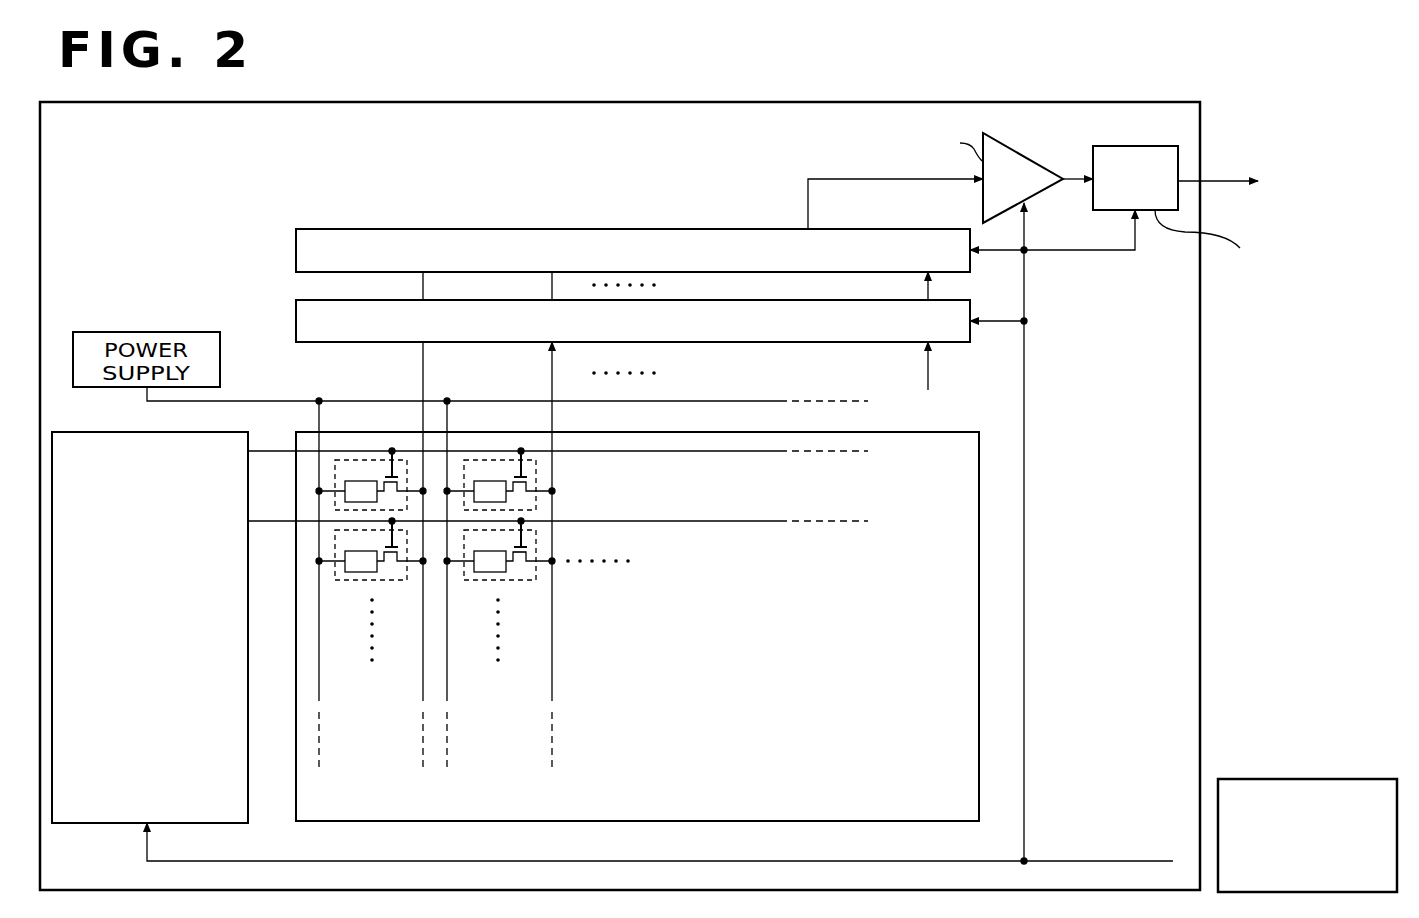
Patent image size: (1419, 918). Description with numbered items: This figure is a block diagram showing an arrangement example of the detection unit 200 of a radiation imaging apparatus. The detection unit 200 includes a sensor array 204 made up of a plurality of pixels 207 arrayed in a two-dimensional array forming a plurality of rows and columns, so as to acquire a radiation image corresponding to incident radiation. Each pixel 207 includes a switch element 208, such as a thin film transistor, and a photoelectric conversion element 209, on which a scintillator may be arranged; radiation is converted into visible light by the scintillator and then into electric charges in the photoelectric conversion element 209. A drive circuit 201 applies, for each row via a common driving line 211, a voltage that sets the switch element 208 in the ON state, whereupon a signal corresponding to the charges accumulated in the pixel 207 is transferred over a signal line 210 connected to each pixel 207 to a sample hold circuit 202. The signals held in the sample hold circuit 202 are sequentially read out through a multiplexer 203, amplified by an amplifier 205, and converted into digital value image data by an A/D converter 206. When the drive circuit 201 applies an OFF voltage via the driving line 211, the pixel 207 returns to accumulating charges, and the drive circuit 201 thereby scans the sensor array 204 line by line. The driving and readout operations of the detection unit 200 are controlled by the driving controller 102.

The detection unit 200 is at (1202, 497).
The drive circuit 201 is at (132, 432).
The sample hold circuit 202 is at (294, 316).
The multiplexer 203 is at (294, 248).
The sensor array 204 is at (905, 432).
The amplifier 205 is at (935, 179).
The A/D converter 206 is at (1203, 223).
The pixel 207 is at (536, 465).
The switch element 208 is at (518, 563).
The photoelectric conversion element 209 is at (487, 572).
The signal line 210 is at (553, 657).
The driving line 211 is at (717, 521).
The driving controller 102 is at (1273, 779).